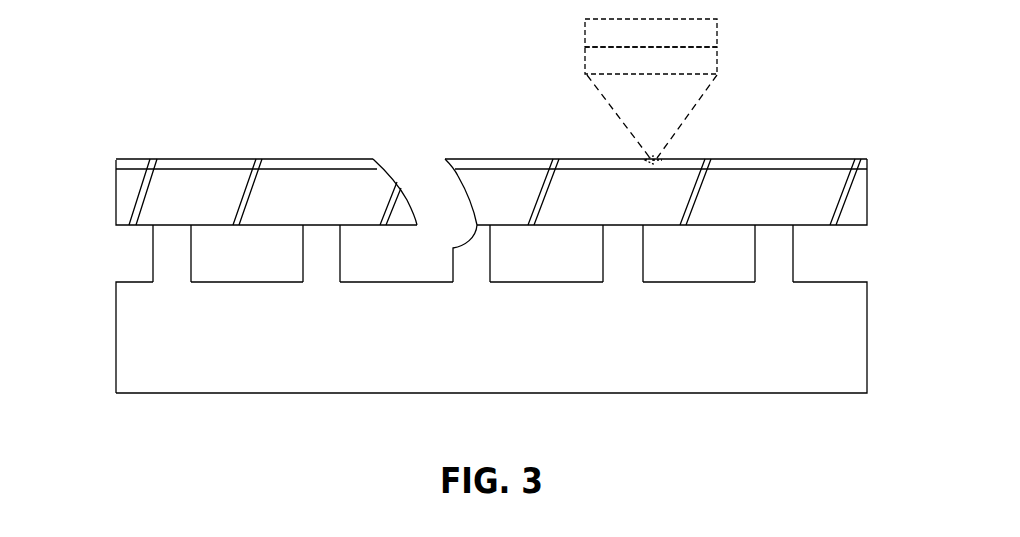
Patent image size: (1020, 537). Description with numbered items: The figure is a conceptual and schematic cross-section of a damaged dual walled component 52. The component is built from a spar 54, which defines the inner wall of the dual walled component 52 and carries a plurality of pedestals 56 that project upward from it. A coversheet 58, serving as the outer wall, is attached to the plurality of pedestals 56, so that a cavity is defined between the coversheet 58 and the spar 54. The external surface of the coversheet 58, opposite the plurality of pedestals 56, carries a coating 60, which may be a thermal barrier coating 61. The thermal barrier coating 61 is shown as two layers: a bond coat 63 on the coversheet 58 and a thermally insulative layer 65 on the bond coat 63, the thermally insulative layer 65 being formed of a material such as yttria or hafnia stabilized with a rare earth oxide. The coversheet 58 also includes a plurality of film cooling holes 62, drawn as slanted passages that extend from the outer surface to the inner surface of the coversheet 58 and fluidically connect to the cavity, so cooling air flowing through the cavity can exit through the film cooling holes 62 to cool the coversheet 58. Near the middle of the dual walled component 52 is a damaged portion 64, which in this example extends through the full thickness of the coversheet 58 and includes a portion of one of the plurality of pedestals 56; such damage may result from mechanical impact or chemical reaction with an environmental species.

The dual walled component 52 is at (118, 74).
The spar 54 is at (123, 340).
The plurality of pedestals 56 is at (312, 253).
The coversheet 58 is at (125, 197).
The coating 60 is at (125, 163).
The thermal barrier coating 61 is at (508, 52).
The plurality of film cooling holes 62 is at (158, 173).
The bond coat 63 is at (585, 65).
The damaged portion 64 is at (398, 142).
The thermally insulative layer 65 is at (585, 30).